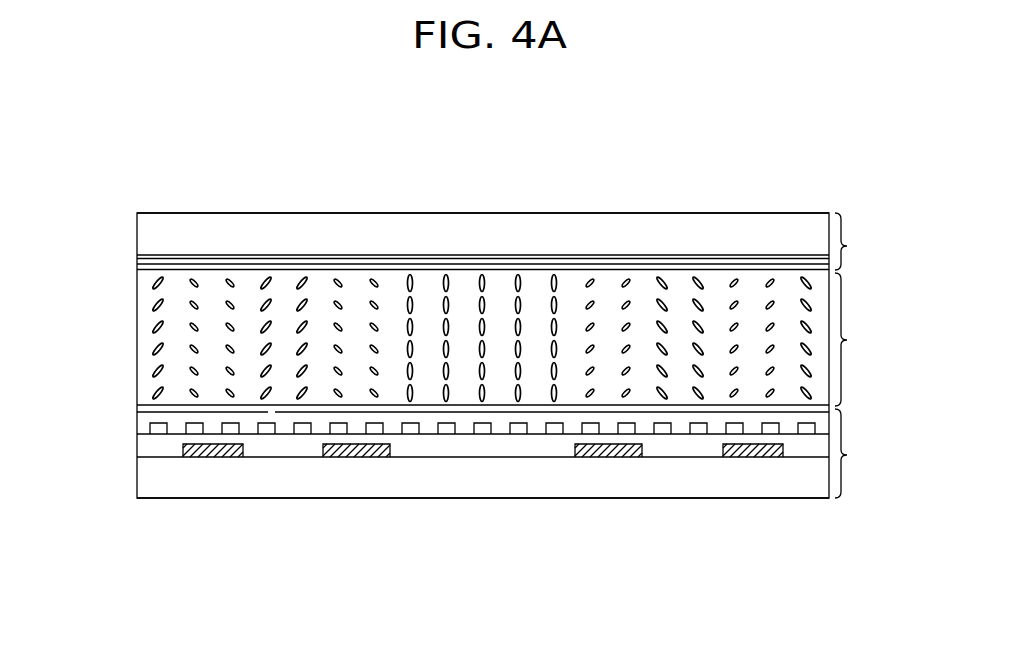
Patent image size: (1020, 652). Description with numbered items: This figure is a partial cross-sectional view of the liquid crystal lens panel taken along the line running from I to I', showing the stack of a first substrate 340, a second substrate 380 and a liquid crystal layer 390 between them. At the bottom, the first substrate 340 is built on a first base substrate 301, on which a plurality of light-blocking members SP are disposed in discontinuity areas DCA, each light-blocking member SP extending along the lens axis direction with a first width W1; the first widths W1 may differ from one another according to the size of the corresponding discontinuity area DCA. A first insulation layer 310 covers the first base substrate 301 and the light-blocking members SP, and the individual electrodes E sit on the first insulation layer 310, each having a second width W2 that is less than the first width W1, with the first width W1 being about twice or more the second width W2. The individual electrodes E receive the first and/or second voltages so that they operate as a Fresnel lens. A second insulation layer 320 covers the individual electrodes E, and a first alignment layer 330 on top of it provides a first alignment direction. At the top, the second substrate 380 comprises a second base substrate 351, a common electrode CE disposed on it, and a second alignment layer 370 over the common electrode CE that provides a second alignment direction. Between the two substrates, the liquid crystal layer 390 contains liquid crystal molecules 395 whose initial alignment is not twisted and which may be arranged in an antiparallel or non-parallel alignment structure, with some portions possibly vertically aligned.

The second base substrate 351 is at (140, 230).
The common electrode CE is at (140, 257).
The second alignment layer 370 is at (140, 265).
The second substrate 380 is at (861, 241).
The liquid crystal molecules 395 is at (154, 328).
The liquid crystal layer 390 is at (861, 339).
The first alignment layer 330 is at (140, 410).
The second insulation layer 320 is at (140, 423).
The first insulation layer 310 is at (140, 445).
The first base substrate 301 is at (140, 480).
The first substrate 340 is at (861, 453).
The discontinuity area DCA is at (782, 523).
The first width W1 is at (183, 458).
The second width W2 is at (511, 437).
The individual electrode E is at (445, 433).
The light-blocking member SP is at (636, 445).
The section line I is at (111, 526).
The section line I' is at (843, 526).